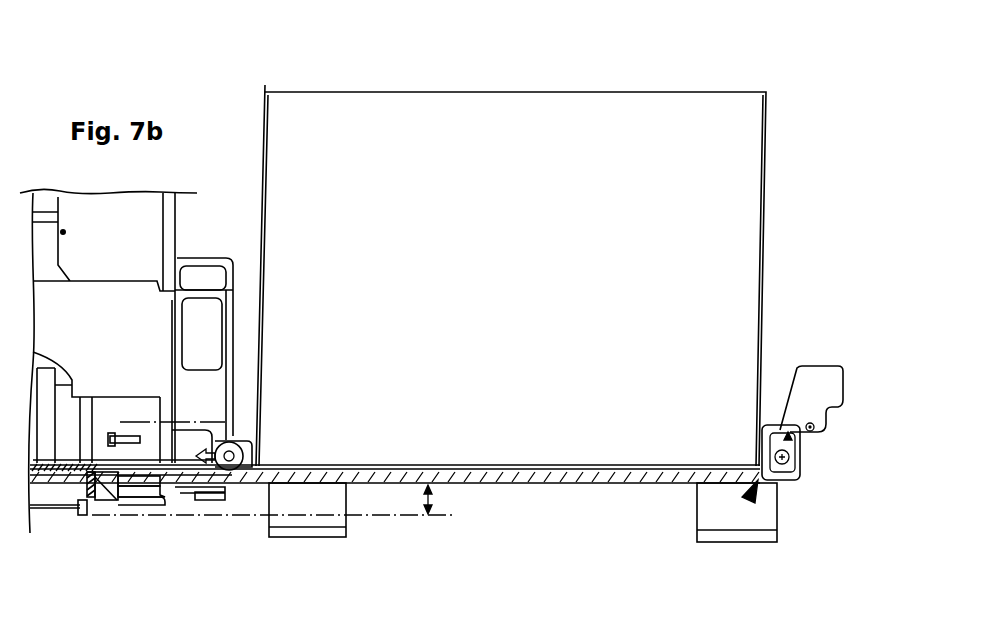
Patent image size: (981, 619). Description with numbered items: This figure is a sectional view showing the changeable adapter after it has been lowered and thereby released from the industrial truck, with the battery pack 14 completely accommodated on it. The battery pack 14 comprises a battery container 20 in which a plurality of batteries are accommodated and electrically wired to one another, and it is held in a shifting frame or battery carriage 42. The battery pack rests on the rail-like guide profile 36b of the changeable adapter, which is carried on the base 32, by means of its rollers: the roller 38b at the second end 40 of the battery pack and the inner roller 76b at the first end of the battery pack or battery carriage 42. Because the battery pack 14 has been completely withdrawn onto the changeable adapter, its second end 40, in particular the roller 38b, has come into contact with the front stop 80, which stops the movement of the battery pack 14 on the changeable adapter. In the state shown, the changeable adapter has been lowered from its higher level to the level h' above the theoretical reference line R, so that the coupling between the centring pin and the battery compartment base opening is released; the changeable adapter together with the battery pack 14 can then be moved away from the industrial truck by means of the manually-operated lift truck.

The battery pack 14 is at (482, 140).
The battery container 20 is at (265, 163).
The base 32 is at (627, 488).
The shifting frame (battery carriage) 42 is at (243, 433).
The inner roller 76b is at (232, 462).
The theoretical reference line R is at (383, 518).
The level h' h is at (444, 499).
The guide profile 36b is at (508, 470).
The roller 38b is at (785, 480).
The second end 40 is at (750, 492).
The front stop 80 is at (795, 472).